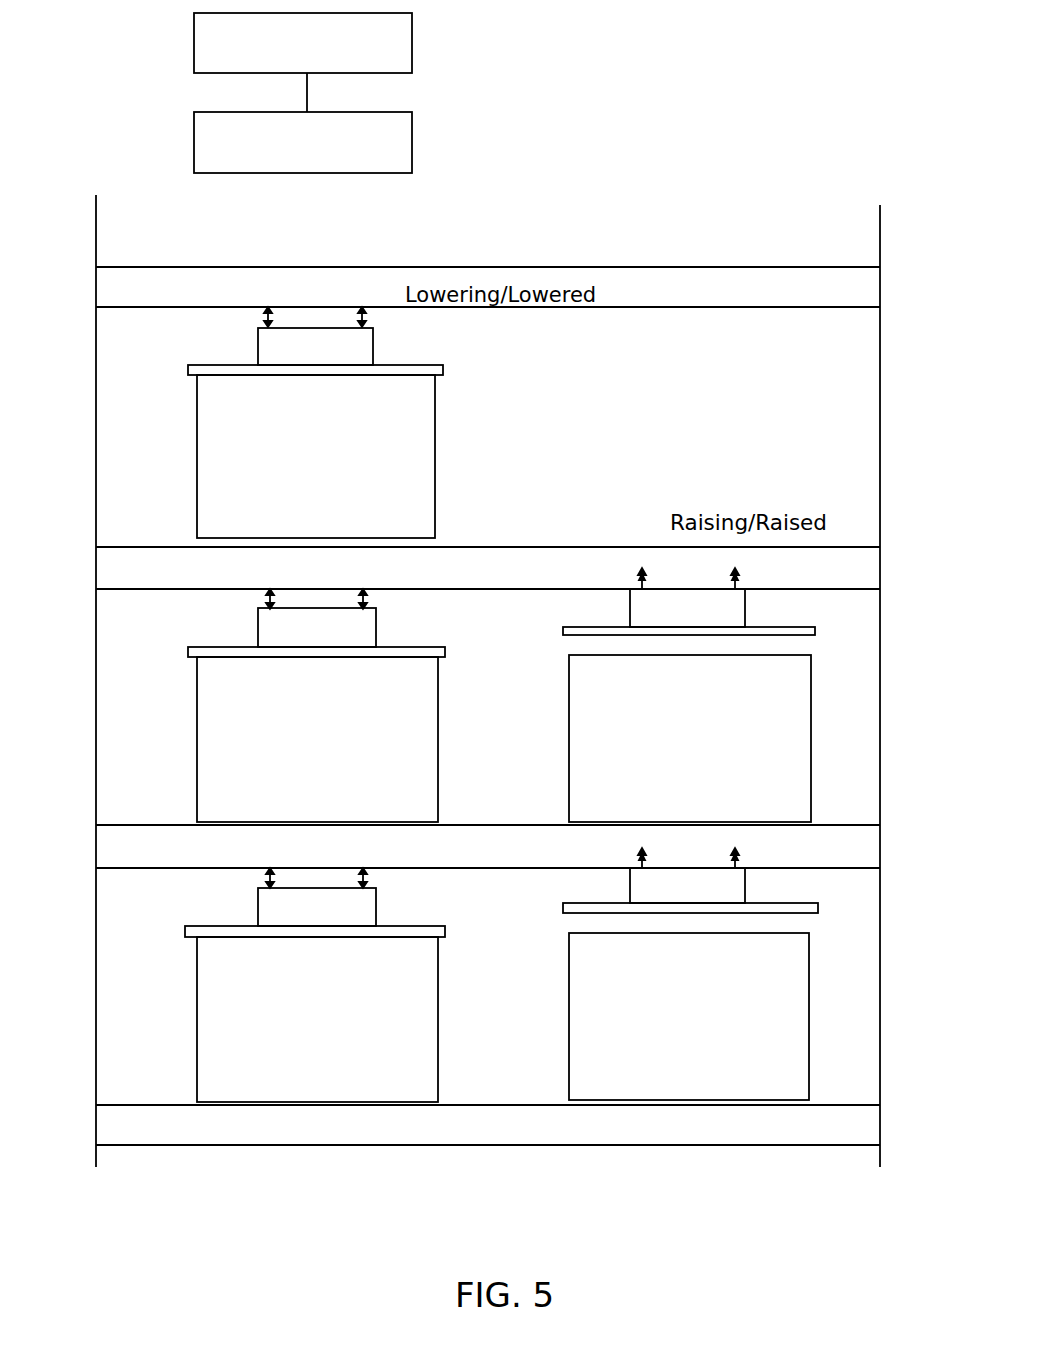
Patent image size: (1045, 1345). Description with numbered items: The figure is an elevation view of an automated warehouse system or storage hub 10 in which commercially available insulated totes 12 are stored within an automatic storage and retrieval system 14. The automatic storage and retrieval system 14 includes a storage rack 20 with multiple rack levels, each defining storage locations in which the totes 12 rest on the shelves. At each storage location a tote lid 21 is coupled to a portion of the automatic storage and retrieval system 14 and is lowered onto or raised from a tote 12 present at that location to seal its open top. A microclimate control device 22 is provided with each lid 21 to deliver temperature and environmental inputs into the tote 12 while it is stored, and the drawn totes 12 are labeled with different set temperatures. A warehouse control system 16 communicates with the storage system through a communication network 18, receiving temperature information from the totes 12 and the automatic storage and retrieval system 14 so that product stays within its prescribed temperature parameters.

The storage hub 10 is at (751, 173).
The tote 12 is at (405, 480).
The automatic storage and retrieval system 14 is at (67, 292).
The warehouse control system 16 is at (403, 55).
The communication network 18 is at (403, 150).
The storage rack 20 is at (884, 352).
The tote lid 21 is at (426, 368).
The microclimate control device 22 is at (258, 351).